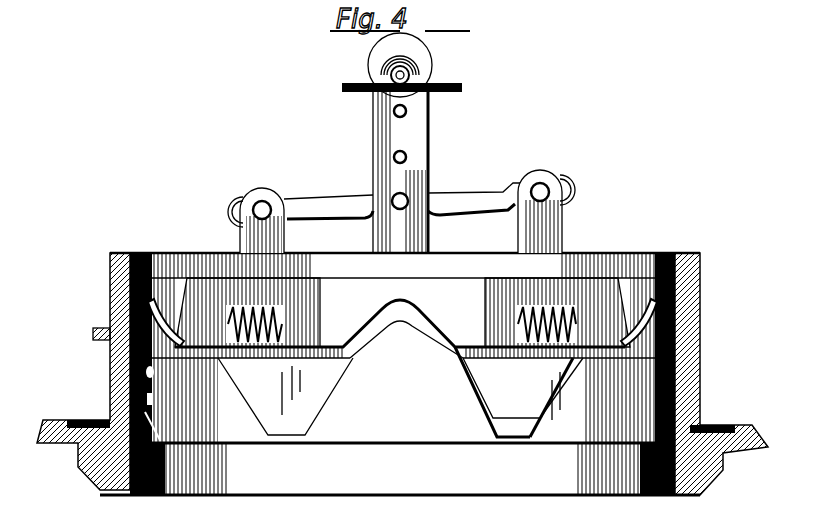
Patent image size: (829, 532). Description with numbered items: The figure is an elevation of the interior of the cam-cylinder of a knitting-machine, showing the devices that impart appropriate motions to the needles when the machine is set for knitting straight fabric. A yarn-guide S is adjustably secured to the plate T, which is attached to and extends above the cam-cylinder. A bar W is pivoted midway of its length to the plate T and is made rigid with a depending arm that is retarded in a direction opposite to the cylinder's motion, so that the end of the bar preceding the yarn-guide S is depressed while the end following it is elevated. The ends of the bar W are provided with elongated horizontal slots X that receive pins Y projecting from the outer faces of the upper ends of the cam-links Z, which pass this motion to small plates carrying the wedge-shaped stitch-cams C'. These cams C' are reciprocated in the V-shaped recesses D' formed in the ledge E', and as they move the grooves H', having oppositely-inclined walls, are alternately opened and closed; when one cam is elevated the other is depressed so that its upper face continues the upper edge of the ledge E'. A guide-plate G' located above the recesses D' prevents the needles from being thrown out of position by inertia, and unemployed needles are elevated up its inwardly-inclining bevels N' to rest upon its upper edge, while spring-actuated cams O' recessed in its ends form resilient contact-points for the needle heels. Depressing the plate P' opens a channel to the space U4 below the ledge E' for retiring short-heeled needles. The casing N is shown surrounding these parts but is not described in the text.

The yarn-guide S is at (392, 28).
The plate T is at (400, 172).
The bar W is at (403, 197).
The elongated horizontal slots X is at (230, 219).
The pins Y is at (263, 202).
The cam-links Z is at (285, 240).
The casing N is at (402, 374).
The spring-actuated cams O' is at (398, 321).
The plate P' is at (116, 402).
The inwardly-inclining bevels N' is at (378, 315).
The guide-plate G' is at (403, 305).
The wedge-shaped stitch-cams C' is at (389, 396).
The recesses D' is at (403, 397).
The ledge E' is at (397, 369).
The grooves H' is at (512, 392).
The space below the ledge U4 is at (403, 469).